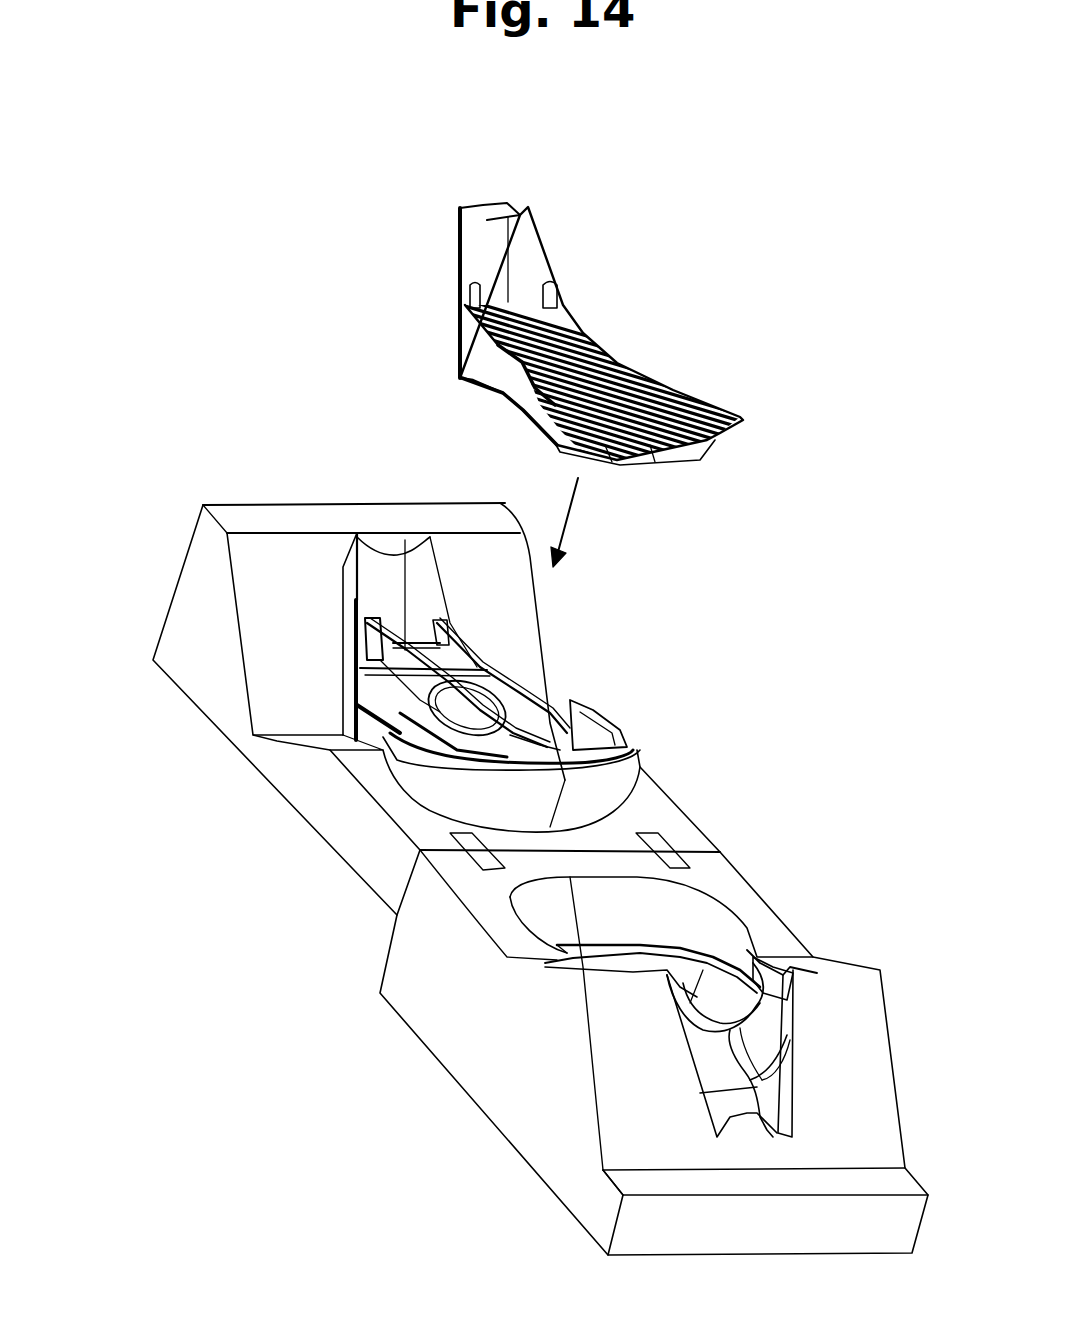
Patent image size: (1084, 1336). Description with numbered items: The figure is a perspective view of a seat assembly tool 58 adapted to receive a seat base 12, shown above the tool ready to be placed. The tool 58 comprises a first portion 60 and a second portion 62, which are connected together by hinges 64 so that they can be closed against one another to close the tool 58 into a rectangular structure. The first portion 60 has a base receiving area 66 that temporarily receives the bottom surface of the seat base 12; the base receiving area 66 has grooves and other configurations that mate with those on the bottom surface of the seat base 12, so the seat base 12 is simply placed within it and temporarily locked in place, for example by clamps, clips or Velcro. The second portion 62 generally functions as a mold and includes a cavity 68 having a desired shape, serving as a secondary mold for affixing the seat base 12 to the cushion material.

The seat base 12 is at (495, 280).
The seat assembly tool 58 is at (200, 938).
The first portion 60 is at (282, 757).
The second portion 62 is at (473, 1050).
The hinges 64 is at (677, 852).
The base receiving area 66 is at (473, 710).
The cavity 68 is at (690, 1007).